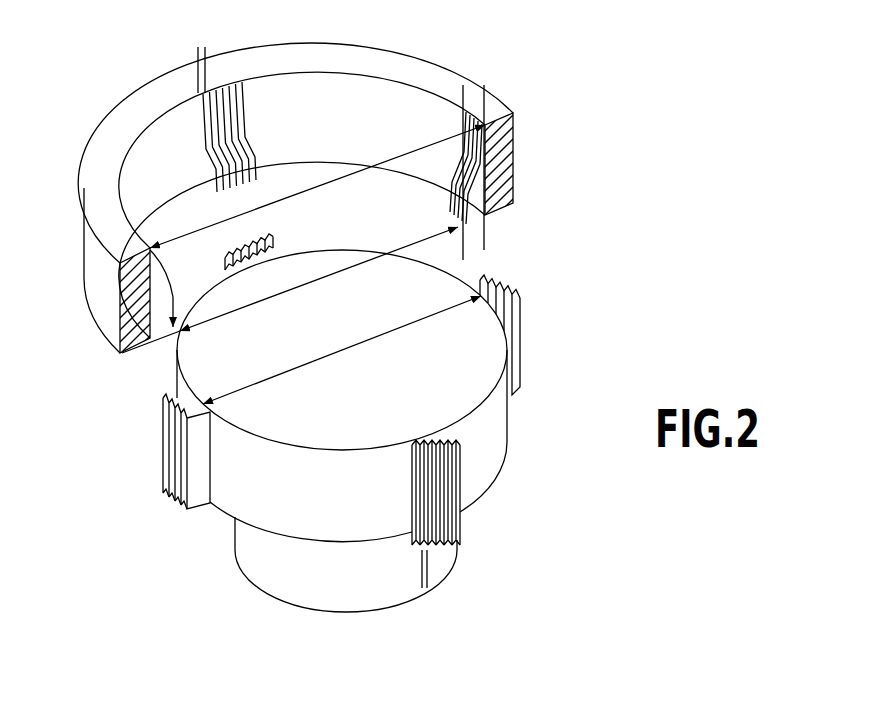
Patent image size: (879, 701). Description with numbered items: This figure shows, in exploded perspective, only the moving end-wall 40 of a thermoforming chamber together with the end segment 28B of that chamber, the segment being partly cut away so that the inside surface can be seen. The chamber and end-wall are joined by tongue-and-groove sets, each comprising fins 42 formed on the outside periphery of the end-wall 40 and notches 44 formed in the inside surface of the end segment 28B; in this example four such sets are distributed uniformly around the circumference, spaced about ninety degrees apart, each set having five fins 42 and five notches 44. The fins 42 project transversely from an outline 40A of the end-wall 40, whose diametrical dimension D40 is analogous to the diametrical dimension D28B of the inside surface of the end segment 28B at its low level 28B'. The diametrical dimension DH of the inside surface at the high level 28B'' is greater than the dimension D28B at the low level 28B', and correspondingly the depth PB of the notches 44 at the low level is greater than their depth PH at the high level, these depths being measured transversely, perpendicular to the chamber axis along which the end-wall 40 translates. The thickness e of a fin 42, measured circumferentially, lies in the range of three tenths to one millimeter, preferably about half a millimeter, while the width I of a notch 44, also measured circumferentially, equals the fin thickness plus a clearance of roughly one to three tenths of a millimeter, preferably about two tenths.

The end segment 28B is at (324, 233).
The low level 28B' is at (302, 205).
The high level 28B'' is at (295, 143).
The notches 44 is at (248, 126).
The notch depth at the high level PH is at (440, 103).
The notch depth at the low level PB is at (440, 257).
The width of notch I is at (172, 55).
The diametrical dimension at the high level DH is at (332, 183).
The diametrical dimension at the low level D28B is at (320, 280).
The diametrical dimension of end-wall outline D40 is at (370, 338).
The end-wall 40 is at (484, 456).
The outline of the end-wall 40A is at (488, 396).
The fins 42 is at (411, 470).
The fin thickness e is at (455, 577).